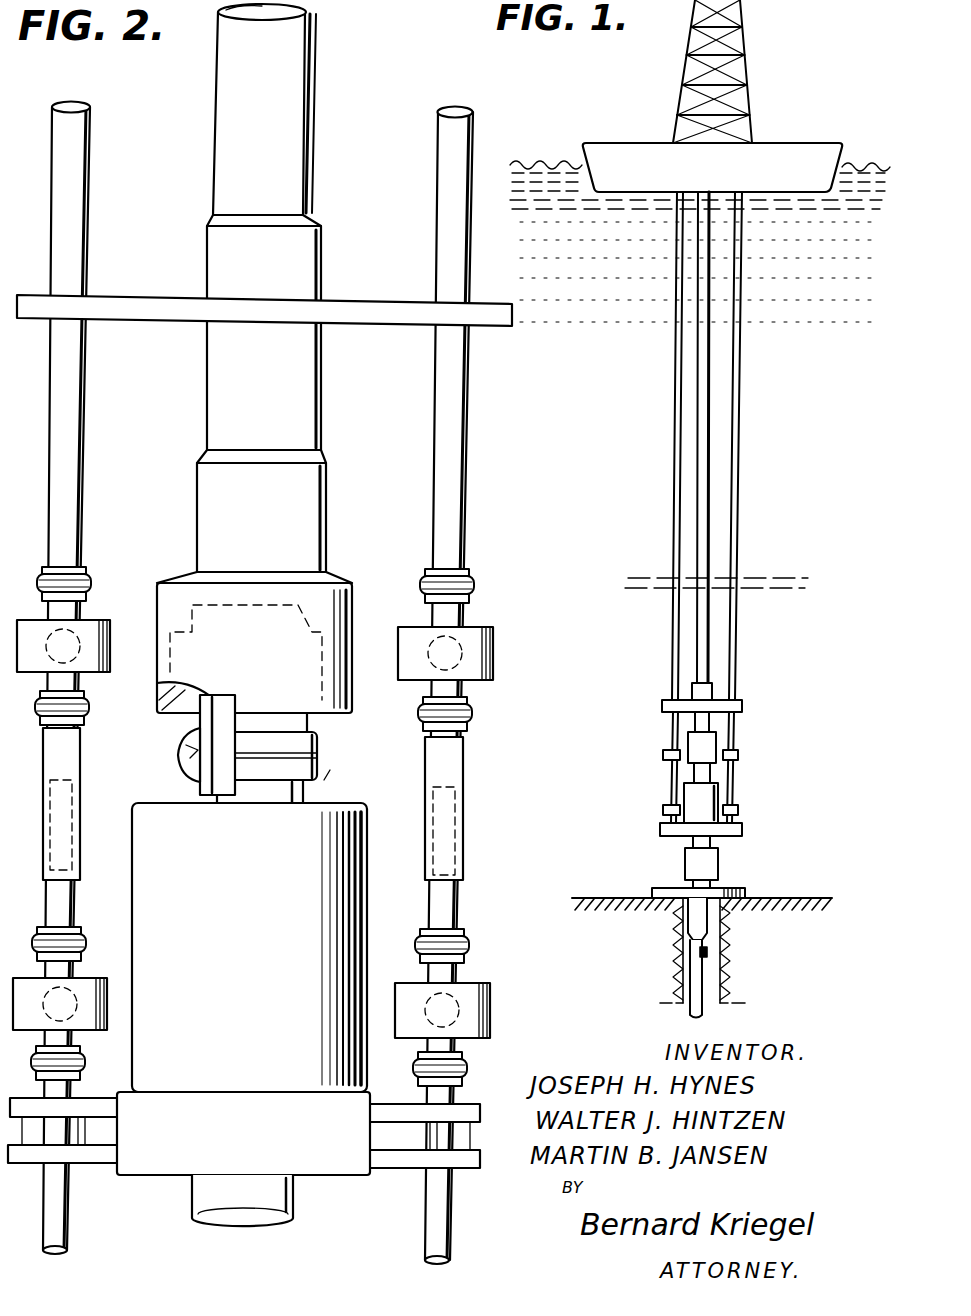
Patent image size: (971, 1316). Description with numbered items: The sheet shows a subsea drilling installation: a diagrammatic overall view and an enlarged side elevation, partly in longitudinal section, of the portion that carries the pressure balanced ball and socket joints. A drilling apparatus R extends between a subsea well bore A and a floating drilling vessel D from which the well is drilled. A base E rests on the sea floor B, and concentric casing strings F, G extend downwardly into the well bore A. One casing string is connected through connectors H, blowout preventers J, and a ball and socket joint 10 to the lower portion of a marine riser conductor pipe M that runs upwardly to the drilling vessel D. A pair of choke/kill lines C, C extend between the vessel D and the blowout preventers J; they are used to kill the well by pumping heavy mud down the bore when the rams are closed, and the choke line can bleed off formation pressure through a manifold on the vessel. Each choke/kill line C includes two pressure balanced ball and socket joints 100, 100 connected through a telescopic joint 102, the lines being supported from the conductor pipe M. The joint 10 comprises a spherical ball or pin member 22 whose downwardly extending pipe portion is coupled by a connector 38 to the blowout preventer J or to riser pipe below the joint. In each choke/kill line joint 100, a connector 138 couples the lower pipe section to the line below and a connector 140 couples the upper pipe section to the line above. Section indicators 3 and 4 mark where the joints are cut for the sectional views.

In FIG. 2, the marine riser conductor pipe M is at (293, 120).
In FIG. 1, the marine riser conductor pipe M is at (697, 523).
In FIG. 2, the choke/kill lines C is at (78, 383).
In FIG. 1, the choke/kill lines C is at (675, 435).
In FIG. 2, the ball and socket joint 10 is at (352, 595).
In FIG. 1, the ball and socket joint 10 is at (707, 752).
In FIG. 2, the pressure balanced ball and socket joints 100 is at (102, 622).
In FIG. 1, the pressure balanced ball and socket joints 100 is at (742, 755).
In FIG. 2, the telescopic joint 102 is at (84, 822).
In FIG. 2, the ball or pin member 22 is at (193, 710).
In FIG. 2, the connector 38 is at (322, 752).
In FIG. 2, the connectors H is at (249, 947).
In FIG. 1, the connectors H is at (693, 795).
In FIG. 2, the blowout preventers J is at (326, 1160).
In FIG. 1, the blowout preventers J is at (742, 828).
In FIG. 2, the connector 140 is at (474, 590).
In FIG. 2, the connector 138 is at (473, 712).
In FIG. 2, the section line 3 is at (257, 560).
In FIG. 2, the section line 4 is at (64, 542).
In FIG. 1, the drilling vessel D is at (793, 160).
In FIG. 1, the drilling apparatus R is at (770, 540).
In FIG. 1, the base E is at (720, 887).
In FIG. 1, the sea floor B is at (810, 898).
In FIG. 1, the casing string F is at (693, 913).
In FIG. 1, the casing string G is at (690, 980).
In FIG. 1, the well bore A is at (712, 952).